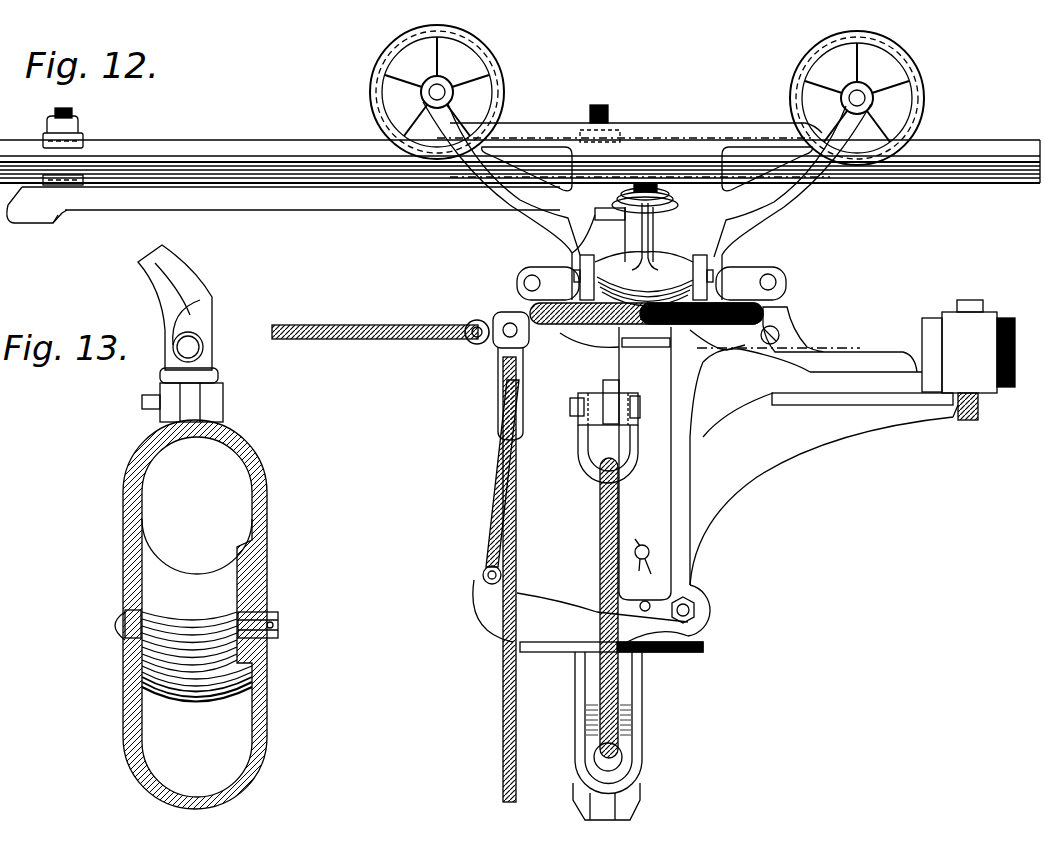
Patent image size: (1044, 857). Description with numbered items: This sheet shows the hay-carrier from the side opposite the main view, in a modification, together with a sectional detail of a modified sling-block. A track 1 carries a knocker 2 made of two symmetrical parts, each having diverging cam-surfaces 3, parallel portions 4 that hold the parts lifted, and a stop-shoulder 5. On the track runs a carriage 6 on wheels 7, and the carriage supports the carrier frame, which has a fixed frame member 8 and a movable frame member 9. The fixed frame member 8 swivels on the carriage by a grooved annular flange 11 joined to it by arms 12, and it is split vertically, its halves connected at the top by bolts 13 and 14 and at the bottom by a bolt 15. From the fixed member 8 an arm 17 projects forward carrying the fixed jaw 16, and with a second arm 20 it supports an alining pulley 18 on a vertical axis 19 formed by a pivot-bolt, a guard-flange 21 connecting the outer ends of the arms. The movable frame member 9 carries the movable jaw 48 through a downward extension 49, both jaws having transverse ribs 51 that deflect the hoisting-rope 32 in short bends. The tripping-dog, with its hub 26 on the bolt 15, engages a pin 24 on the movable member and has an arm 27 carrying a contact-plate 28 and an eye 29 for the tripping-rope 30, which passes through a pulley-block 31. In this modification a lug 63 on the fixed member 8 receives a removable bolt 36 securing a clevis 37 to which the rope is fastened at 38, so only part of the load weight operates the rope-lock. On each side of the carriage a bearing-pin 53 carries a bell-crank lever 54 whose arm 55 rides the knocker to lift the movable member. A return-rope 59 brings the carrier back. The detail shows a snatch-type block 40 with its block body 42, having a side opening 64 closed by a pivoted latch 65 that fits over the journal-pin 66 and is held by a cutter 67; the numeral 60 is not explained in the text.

In FIG. 12, the track 1 is at (233, 150).
In FIG. 12, the knocker 2 is at (245, 208).
In FIG. 12, the cam-surfaces 3 is at (46, 205).
In FIG. 12, the parallel portions 4 is at (387, 210).
In FIG. 12, the stop-shoulder 5 is at (60, 210).
In FIG. 12, the carriage 6 is at (645, 122).
In FIG. 12, the wheels 7 is at (490, 75).
In FIG. 13, the fixed frame member 8 is at (712, 545).
In FIG. 13, the movable frame member 9 is at (660, 497).
In FIG. 13, the grooved annular flange 11 is at (512, 312).
In FIG. 13, the arms 12 is at (690, 350).
In FIG. 13, the bolt 13 is at (790, 330).
In FIG. 13, the bolt 14 is at (474, 322).
In FIG. 13, the bolt 15 is at (697, 608).
In FIG. 13, the fixed jaw 16 is at (842, 420).
In FIG. 13, the arm 17 is at (805, 448).
In FIG. 13, the alining or guiding pulley 18 is at (1012, 345).
In FIG. 13, the vertical axis 19 is at (975, 306).
In FIG. 13, the second arm 20 is at (888, 358).
In FIG. 13, the guard-flange 21 is at (960, 328).
In FIG. 13, the pin 24 is at (645, 545).
In FIG. 13, the hub 26 is at (700, 600).
In FIG. 13, the arm 27 is at (532, 615).
In FIG. 13, the contact-plate 28 is at (549, 652).
In FIG. 13, the eye 29 is at (483, 576).
In FIG. 13, the tripping-rope 30 is at (518, 560).
In FIG. 13, the pulley-block 31 is at (497, 410).
In FIG. 13, the hoisting-rope 32 is at (1022, 366).
In FIG. 13, the removable bolt 36 is at (570, 406).
In FIG. 13, the clevis 37 is at (580, 455).
In FIG. 13, the rope fastening 38 is at (600, 470).
In FIG. 13, the block 40 is at (644, 720).
In FIG. 13, the block 42 is at (636, 808).
In FIG. 13, the movable jaw 48 is at (850, 348).
In FIG. 13, the downward extension 49 is at (710, 473).
In FIG. 13, the transverse ribs 51 is at (906, 405).
In FIG. 12, the bearing-pin 53 is at (752, 267).
In FIG. 12, the bell-crank lever 54 is at (660, 262).
In FIG. 12, the arm 55 is at (660, 208).
In FIG. 13, the return-rope 59 is at (348, 330).
In FIG. 13, the neck fitting 60 is at (180, 333).
In FIG. 13, the lug 63 is at (600, 400).
In FIG. 13, the opening 64 is at (225, 480).
In FIG. 13, the pivoted latch 65 is at (268, 505).
In FIG. 13, the journal-pin 66 is at (278, 628).
In FIG. 13, the cutter 67 is at (273, 623).